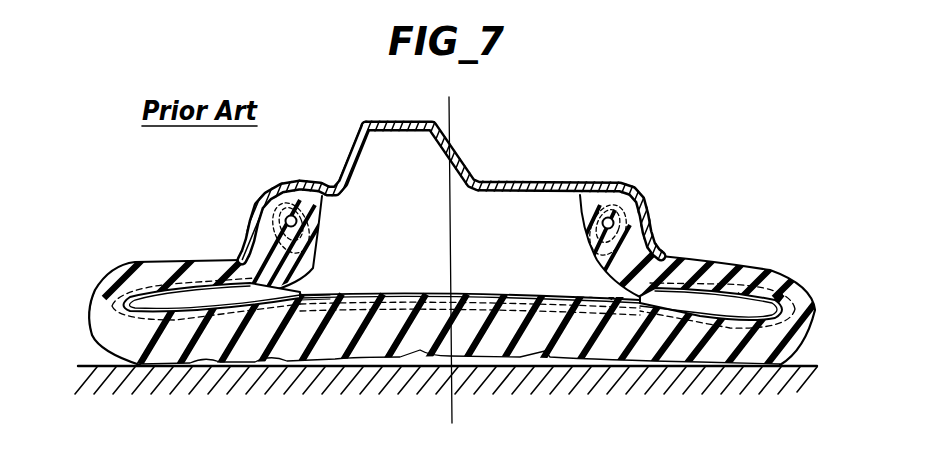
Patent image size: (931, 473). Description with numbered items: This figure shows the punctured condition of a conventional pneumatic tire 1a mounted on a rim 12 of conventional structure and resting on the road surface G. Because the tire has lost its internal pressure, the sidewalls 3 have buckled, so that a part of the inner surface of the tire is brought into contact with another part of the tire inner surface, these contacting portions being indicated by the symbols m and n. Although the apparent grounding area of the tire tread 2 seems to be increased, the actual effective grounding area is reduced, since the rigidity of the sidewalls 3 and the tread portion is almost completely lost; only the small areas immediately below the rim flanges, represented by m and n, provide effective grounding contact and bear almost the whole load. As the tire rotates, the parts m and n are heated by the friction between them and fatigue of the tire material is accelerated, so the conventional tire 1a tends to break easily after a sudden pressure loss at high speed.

The conventional tire 1a is at (703, 258).
The tire tread 2 is at (413, 350).
The sidewalls 3 is at (88, 320).
The rim 12 is at (470, 178).
The center line C is at (445, 264).
The road surface G is at (522, 383).
The contact portion m is at (305, 295).
The contact portion n is at (315, 293).